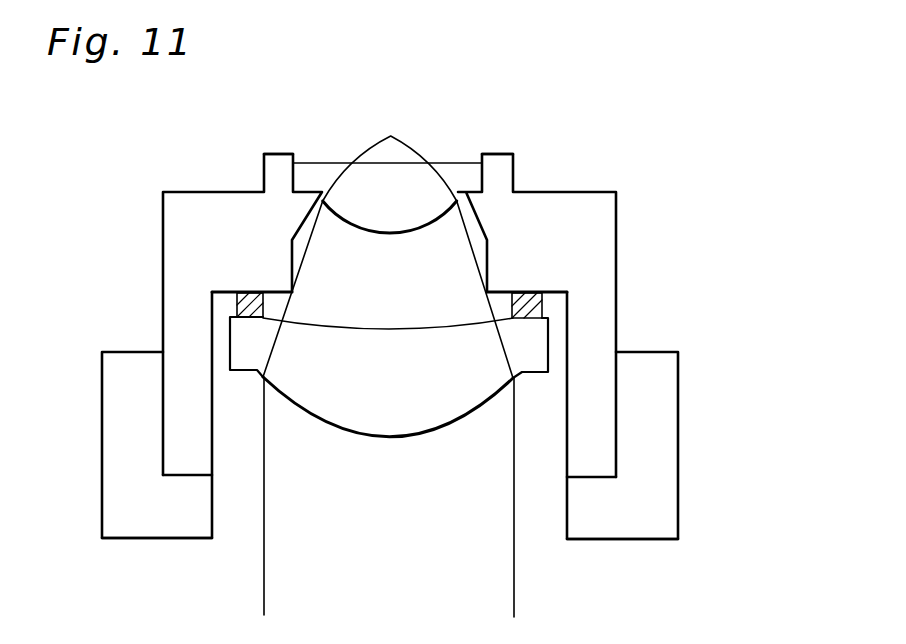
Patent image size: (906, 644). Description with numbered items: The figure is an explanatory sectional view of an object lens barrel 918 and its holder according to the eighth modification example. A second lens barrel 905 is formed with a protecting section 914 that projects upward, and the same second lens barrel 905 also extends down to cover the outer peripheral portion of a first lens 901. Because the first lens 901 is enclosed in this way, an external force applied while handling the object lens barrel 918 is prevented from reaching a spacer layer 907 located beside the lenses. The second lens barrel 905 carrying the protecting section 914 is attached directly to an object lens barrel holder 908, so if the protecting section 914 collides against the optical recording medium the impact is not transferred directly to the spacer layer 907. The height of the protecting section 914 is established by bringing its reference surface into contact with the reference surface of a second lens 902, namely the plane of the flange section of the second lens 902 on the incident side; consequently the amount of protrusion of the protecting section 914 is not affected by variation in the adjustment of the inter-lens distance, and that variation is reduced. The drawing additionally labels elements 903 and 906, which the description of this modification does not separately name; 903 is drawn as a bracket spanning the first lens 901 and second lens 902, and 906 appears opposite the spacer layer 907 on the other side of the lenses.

The first lens 901 is at (352, 405).
The second lens 902 is at (390, 213).
The lens group 903 is at (492, 518).
The second lens barrel 905 is at (585, 217).
The left spacer member 906 is at (285, 288).
The spacer layer 907 is at (540, 310).
The object lens barrel holder 908 is at (660, 375).
The protecting section 914 is at (500, 167).
The object lens barrel 918 is at (537, 562).